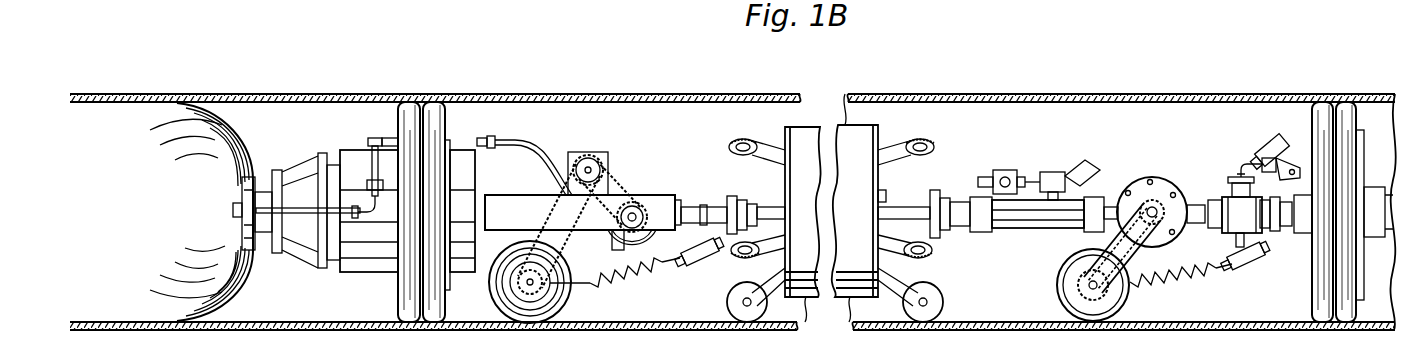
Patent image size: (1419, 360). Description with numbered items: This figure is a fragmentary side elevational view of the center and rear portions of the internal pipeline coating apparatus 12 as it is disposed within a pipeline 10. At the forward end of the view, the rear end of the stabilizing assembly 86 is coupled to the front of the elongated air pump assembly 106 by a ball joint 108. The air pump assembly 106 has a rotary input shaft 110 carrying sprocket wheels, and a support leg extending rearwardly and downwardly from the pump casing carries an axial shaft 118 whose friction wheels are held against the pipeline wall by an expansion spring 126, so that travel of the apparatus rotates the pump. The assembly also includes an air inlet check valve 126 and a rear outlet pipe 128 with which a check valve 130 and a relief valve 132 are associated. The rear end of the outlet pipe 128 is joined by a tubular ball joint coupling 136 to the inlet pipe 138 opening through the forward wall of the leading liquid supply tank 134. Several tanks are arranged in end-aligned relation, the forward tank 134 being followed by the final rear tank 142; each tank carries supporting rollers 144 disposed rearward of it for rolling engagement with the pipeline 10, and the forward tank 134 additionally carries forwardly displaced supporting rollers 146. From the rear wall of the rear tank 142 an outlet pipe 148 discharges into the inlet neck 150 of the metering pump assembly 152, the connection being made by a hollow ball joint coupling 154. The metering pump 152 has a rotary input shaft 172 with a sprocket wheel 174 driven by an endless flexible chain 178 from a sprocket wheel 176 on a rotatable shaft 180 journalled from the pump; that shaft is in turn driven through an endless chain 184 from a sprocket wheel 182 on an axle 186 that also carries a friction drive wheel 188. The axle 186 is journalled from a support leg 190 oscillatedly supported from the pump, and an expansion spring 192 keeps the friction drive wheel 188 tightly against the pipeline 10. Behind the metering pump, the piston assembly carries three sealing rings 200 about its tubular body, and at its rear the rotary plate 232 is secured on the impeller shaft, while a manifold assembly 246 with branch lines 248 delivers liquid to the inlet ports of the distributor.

The pipeline 10 is at (964, 97).
The internal pipeline coating apparatus 12 is at (681, 124).
The stabilizing assembly 86 is at (1372, 246).
The air pump assembly 106 is at (1201, 194).
The ball joint 108 is at (1143, 190).
The rotary input shaft 110 is at (1165, 243).
The axial shaft 118 is at (1085, 285).
The expansion spring 126 is at (1284, 157).
The rear outlet pipe 128 is at (1016, 218).
The check valve 130 is at (1077, 160).
The relief valve 132 is at (1032, 158).
The leading liquid supply tank 134 is at (858, 143).
The tubular ball joint coupling 136 is at (948, 192).
The inlet pipe 138 is at (907, 210).
The rear tank 142 is at (806, 127).
The supporting rollers 144 is at (742, 141).
The supporting rollers 146 is at (921, 140).
The outlet pipe 148 is at (768, 210).
The inlet neck 150 is at (688, 209).
The metering pump assembly 152 is at (606, 149).
The hollow ball joint coupling 154 is at (730, 208).
The rotary input shaft 172 is at (662, 270).
The sprocket wheel 174 is at (602, 196).
The sprocket wheel 176 is at (588, 154).
The endless flexible chain 178 is at (633, 190).
The rotatable shaft 180 is at (584, 171).
The sprocket wheel 182 is at (512, 293).
The endless chain 184 is at (562, 294).
The axle 186 is at (534, 300).
The friction drive wheel 188 is at (490, 298).
The support leg 190 is at (583, 212).
The expansion spring 192 is at (623, 280).
The sealing rings 200 is at (434, 100).
The rotary plate 232 is at (242, 222).
The manifold assembly 246 is at (363, 142).
The branch lines 248 is at (302, 216).